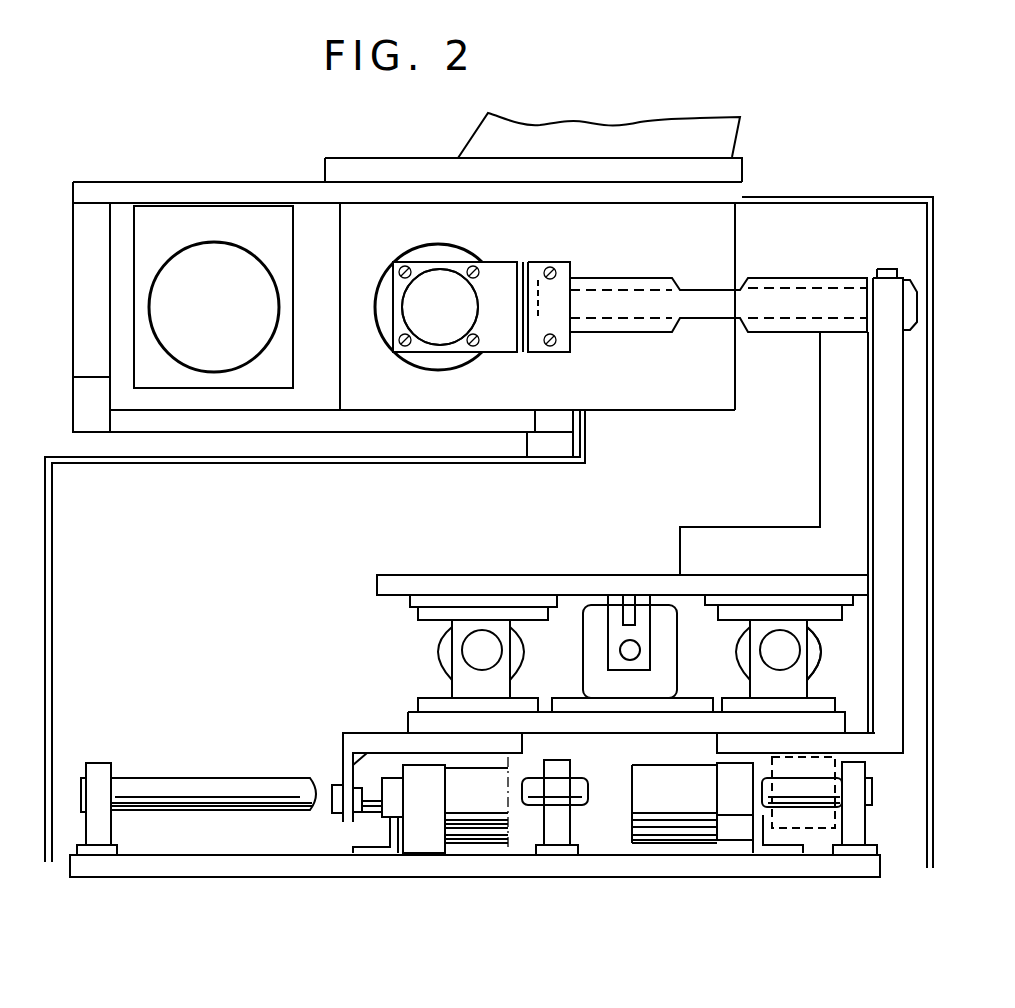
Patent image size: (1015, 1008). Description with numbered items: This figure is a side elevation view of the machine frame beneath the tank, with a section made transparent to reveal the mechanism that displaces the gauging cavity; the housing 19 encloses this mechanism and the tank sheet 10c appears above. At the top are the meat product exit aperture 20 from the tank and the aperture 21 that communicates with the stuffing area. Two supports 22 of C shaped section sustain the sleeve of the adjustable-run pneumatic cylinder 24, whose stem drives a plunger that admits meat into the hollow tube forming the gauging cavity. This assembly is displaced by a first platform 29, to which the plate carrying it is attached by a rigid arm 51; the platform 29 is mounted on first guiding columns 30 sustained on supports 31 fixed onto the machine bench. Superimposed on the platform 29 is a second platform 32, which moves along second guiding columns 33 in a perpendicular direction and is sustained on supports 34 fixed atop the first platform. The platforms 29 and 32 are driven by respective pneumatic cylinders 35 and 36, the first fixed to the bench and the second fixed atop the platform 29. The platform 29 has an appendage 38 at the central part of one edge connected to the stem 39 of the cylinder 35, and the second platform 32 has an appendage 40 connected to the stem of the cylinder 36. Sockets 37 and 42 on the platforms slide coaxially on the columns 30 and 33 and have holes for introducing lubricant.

The sheet material 10c is at (733, 138).
The housing 19 is at (932, 440).
The meat product exit aperture 20 is at (428, 257).
The aperture 21 is at (232, 268).
The supports of C shaped section 22 is at (780, 333).
The adjustable-run pneumatic cylinder 24 is at (447, 337).
The first platform 29 is at (515, 742).
The first guiding columns 30 is at (187, 790).
The supports 31 is at (103, 827).
The second platform 32 is at (493, 575).
The second guiding columns 33 is at (470, 648).
The supports 34 is at (767, 690).
The pneumatic cylinder 35 is at (710, 817).
The pneumatic cylinder 36 is at (585, 635).
The socket 37 is at (835, 765).
The appendage 38 is at (348, 775).
The stem 39 is at (363, 830).
The appendage 40 is at (638, 632).
The socket 42 is at (815, 650).
The rigid arm 51 is at (705, 290).